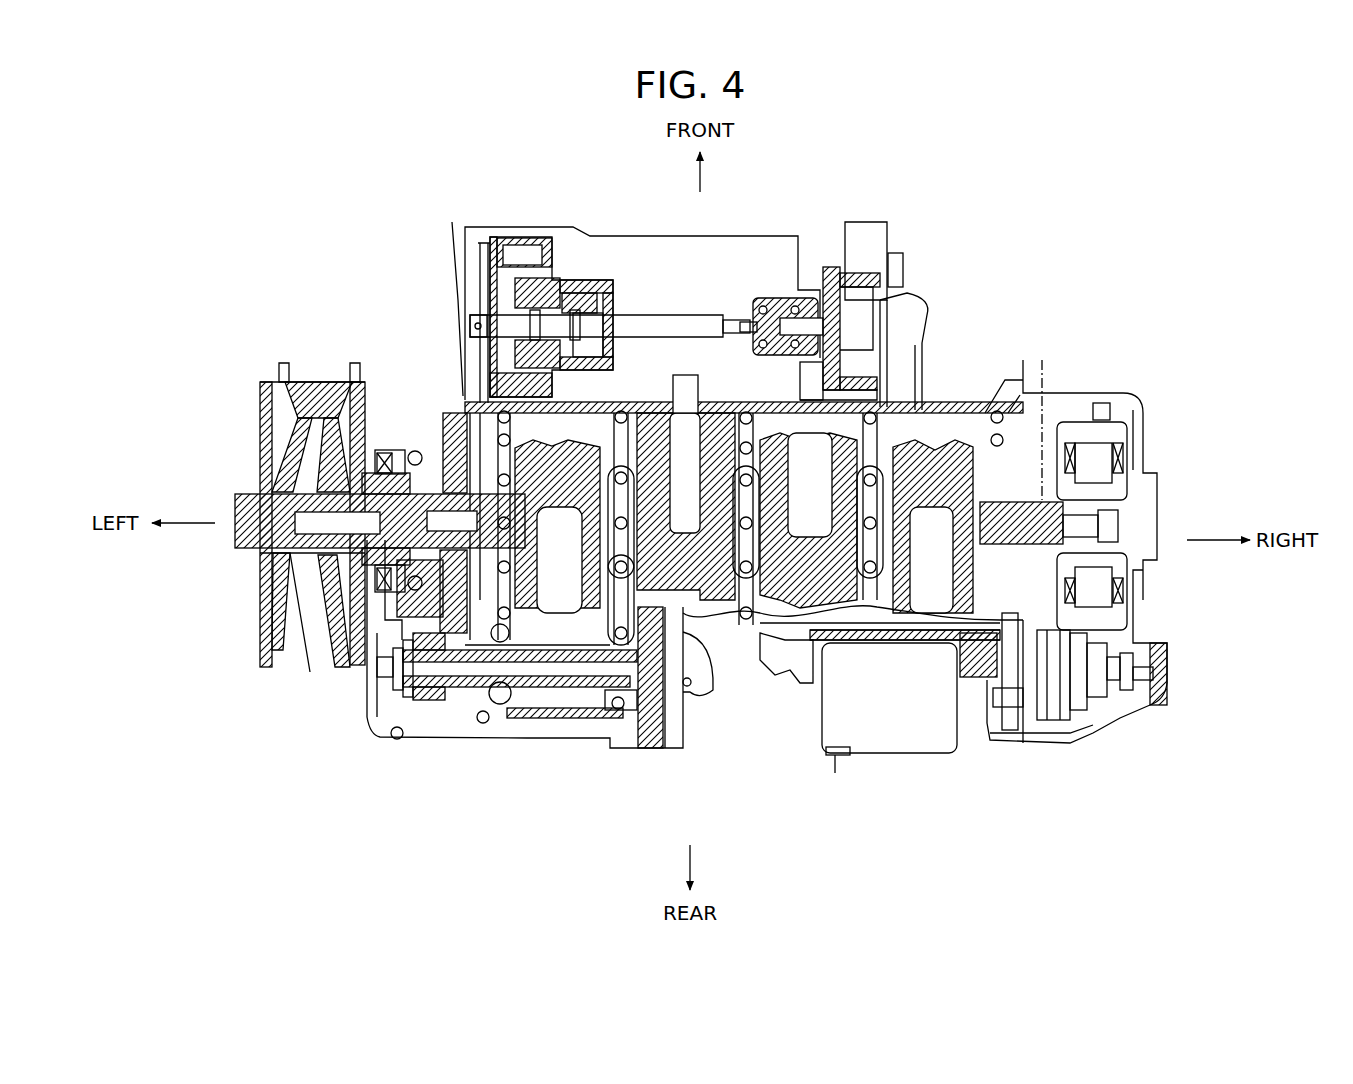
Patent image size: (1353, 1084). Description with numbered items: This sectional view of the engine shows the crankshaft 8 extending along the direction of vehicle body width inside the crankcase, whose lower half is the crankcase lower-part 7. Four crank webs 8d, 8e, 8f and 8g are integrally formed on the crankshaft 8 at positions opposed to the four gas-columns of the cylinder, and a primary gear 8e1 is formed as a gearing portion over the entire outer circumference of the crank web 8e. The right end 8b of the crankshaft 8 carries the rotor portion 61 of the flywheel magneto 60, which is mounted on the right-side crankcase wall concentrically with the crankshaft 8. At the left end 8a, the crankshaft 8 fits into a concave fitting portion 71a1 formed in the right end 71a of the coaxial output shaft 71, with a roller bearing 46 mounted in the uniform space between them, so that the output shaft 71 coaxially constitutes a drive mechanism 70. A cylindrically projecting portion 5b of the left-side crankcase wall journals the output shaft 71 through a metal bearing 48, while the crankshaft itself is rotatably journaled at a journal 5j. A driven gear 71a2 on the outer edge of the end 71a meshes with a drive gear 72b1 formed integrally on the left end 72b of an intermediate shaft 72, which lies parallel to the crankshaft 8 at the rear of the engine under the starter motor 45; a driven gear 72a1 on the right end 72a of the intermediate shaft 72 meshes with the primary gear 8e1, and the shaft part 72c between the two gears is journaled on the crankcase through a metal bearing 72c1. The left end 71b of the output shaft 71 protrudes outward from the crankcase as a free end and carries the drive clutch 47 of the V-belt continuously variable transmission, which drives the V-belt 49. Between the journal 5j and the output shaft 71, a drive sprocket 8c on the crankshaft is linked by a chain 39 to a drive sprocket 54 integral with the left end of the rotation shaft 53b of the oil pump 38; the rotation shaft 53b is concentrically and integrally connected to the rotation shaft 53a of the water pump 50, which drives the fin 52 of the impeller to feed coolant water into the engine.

The crankshaft 8 is at (838, 602).
The other end of crankshaft 8a is at (437, 603).
The end of crankshaft 8b is at (1080, 540).
The drive sprocket 8c is at (460, 643).
The crank web 8d is at (530, 622).
The crank web 8e is at (704, 610).
The primary gear 8e1 is at (665, 608).
The crank web 8f is at (807, 605).
The crank web 8g is at (924, 592).
The cylindrically projecting portion 5b is at (415, 443).
The journal 5j is at (510, 730).
The crankcase lower-part 7 is at (958, 403).
The oil pump 38 is at (522, 237).
The chain 39 is at (450, 268).
The starter motor 45 is at (920, 742).
The roller bearing 46 is at (410, 590).
The drive clutch 47 is at (266, 378).
The metal bearing 48 is at (395, 457).
The V-belt 49 is at (308, 380).
The water pump 50 is at (925, 300).
The fin 52 is at (863, 280).
The rotation shaft of water pump 53a is at (742, 316).
The rotation shaft of oil pump 53b is at (668, 316).
The drive sprocket 54 is at (478, 248).
The flywheel magneto 60 is at (1119, 411).
The rotor portion 61 is at (1123, 427).
The drive mechanism 70 is at (362, 724).
The output shaft 71 is at (327, 548).
The end of output shaft 71a is at (410, 733).
The concave fitting portion 71a1 is at (417, 553).
The driven gear 71a2 is at (444, 410).
The other end of output shaft 71b is at (262, 556).
The intermediate shaft 72 is at (572, 692).
The end of intermediate shaft 72a is at (655, 700).
The driven gear 72a1 is at (650, 748).
The other end of intermediate shaft 72b is at (393, 742).
The drive gear 72b1 is at (437, 740).
The shaft part 72c is at (555, 700).
The metal bearing 72c1 is at (503, 740).